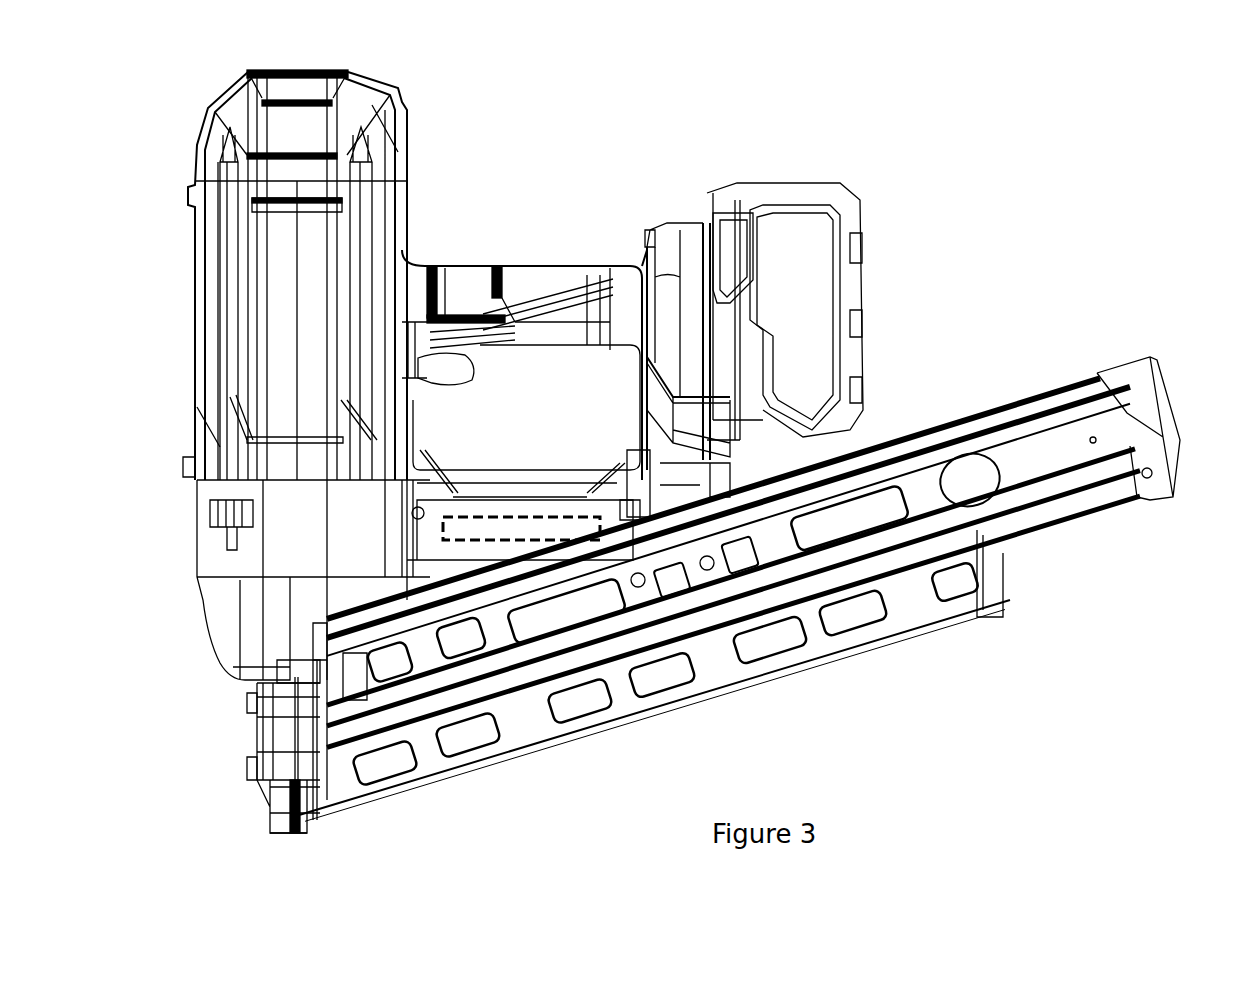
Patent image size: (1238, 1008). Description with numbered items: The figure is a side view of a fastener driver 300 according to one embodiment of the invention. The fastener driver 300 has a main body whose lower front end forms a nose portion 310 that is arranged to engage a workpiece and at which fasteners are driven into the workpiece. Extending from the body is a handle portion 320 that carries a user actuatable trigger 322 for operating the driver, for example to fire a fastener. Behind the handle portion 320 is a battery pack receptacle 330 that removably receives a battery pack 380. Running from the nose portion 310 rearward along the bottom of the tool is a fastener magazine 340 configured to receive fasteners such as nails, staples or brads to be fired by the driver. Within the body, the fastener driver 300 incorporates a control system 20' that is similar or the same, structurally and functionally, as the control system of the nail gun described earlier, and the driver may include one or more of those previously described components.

The fastener driver 300 is at (959, 104).
The nose portion 310 is at (237, 825).
The handle portion 320 is at (526, 243).
The trigger 322 is at (445, 380).
The battery pack receptacle 330 is at (697, 203).
The battery pack 380 is at (865, 315).
The fastener magazine 340 is at (840, 695).
The control system 20' is at (521, 480).